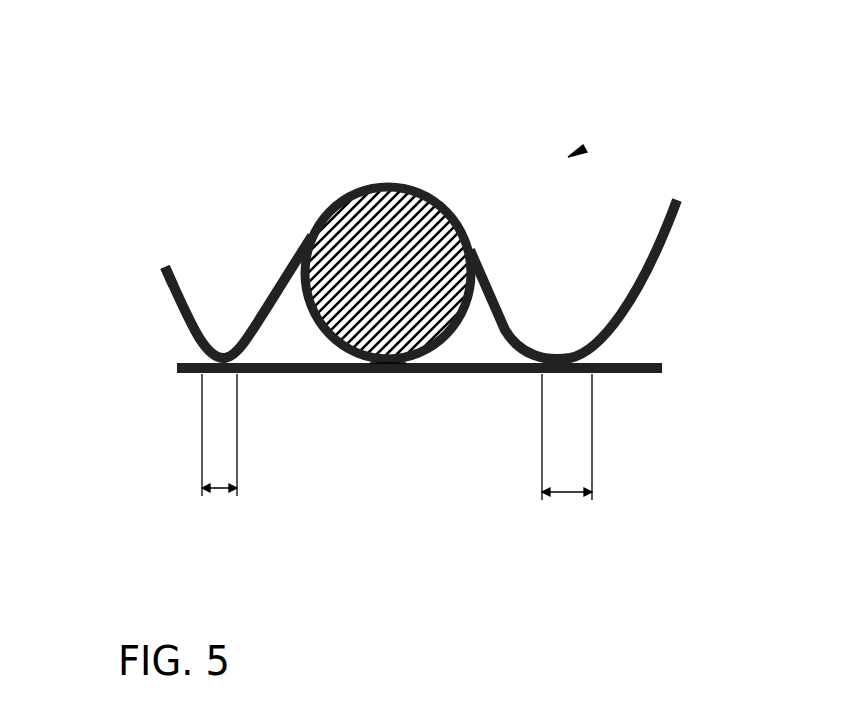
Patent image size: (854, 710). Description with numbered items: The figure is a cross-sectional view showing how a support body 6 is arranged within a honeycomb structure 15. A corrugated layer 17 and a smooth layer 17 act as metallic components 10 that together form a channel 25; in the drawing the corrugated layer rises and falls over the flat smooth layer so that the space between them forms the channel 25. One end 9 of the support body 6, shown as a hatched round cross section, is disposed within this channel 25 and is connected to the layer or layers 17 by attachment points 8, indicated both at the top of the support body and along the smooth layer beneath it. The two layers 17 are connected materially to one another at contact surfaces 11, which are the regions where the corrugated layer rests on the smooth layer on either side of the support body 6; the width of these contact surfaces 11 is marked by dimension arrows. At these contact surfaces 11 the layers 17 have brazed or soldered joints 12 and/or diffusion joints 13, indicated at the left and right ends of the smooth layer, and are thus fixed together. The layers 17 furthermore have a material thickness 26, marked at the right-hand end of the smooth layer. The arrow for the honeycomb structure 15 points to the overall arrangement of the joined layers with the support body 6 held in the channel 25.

The support body 6 is at (345, 219).
The attachment points 8 is at (418, 187).
The end 9 is at (390, 348).
The metallic components 10 is at (271, 294).
The contact surfaces 11 is at (397, 459).
The brazed or soldered joints 12 is at (200, 374).
The diffusion joints 13 is at (597, 373).
The honeycomb structure 15 is at (575, 152).
The corrugated layer and smooth layer 17 is at (163, 265).
The channel 25 is at (485, 348).
The material thickness 26 is at (662, 366).